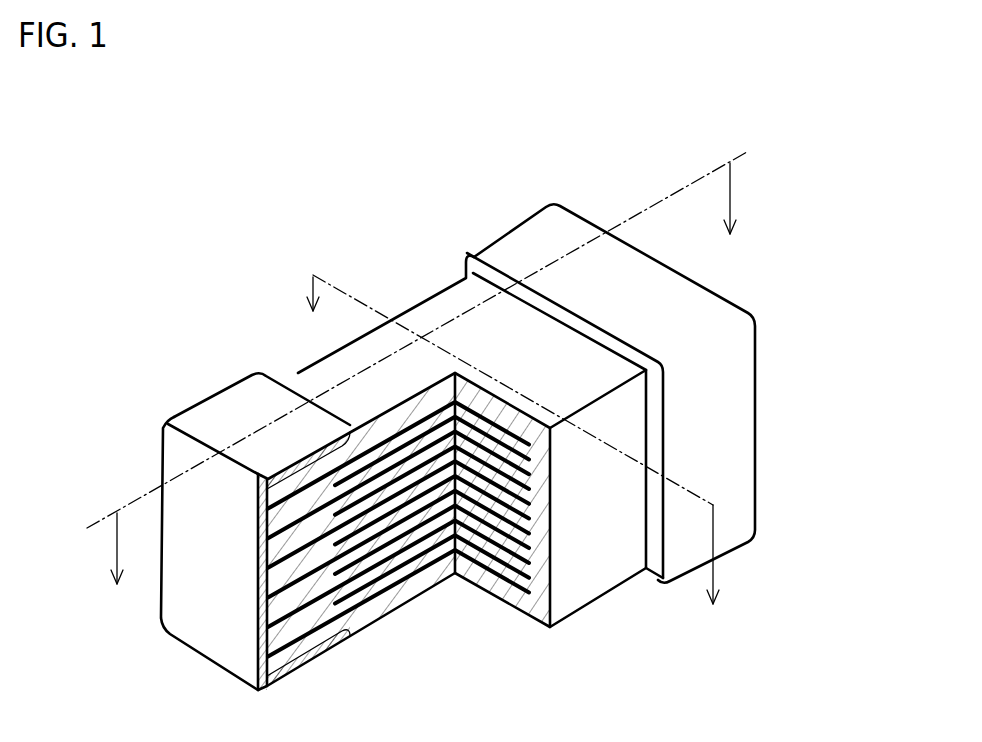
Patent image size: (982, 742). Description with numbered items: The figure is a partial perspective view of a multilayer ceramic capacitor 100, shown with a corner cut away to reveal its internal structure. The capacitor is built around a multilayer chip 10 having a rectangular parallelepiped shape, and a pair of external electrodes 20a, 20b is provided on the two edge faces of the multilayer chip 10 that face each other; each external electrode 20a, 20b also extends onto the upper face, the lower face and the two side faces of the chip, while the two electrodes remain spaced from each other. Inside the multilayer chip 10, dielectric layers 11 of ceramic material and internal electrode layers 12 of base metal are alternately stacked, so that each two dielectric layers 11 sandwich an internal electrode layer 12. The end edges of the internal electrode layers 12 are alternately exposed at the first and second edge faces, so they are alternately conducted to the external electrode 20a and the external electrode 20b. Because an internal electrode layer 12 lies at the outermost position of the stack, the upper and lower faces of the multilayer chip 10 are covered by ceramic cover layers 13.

The multilayer ceramic capacitor 100 is at (852, 138).
The multilayer chip 10 is at (300, 371).
The dielectric layer 11 is at (377, 582).
The internal electrode layer 12 is at (350, 618).
The cover layer 13 is at (425, 315).
The external electrode 20a is at (190, 408).
The external electrode 20b is at (510, 243).